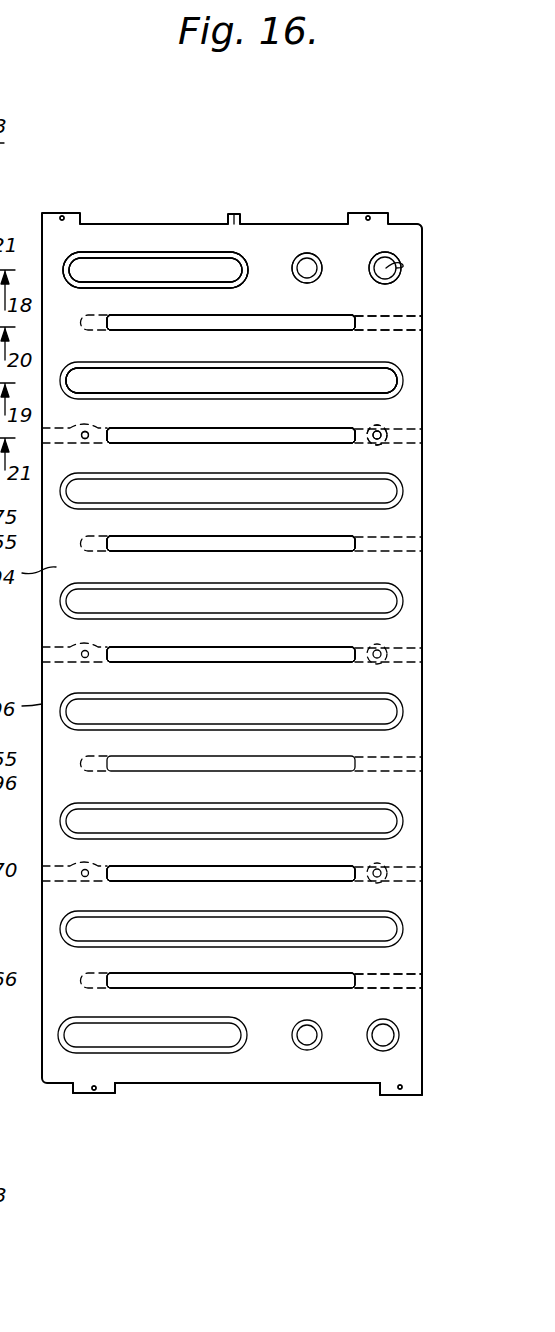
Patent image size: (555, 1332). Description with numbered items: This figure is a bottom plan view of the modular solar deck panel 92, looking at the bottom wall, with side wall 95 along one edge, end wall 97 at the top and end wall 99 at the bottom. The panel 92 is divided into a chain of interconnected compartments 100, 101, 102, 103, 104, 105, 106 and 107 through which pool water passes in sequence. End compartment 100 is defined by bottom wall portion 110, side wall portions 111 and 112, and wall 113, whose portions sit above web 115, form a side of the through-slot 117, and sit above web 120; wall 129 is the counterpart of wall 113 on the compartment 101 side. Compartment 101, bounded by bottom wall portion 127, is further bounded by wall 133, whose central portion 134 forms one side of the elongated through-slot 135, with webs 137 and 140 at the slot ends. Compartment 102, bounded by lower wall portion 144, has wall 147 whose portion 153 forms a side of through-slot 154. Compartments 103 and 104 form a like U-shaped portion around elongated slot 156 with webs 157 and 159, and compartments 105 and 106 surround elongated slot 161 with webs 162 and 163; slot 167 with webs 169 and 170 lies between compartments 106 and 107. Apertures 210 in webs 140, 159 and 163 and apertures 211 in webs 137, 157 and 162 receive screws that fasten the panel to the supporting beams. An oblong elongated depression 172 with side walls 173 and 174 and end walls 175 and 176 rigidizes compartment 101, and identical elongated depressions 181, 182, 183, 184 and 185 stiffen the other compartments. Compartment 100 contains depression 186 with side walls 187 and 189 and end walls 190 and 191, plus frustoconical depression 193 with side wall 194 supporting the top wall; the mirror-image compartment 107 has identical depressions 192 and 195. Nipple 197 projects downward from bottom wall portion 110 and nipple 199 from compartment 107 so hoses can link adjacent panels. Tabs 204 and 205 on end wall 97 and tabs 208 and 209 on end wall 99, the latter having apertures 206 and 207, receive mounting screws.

The solar deck panel 92 is at (264, 215).
The tab 204 is at (80, 220).
The portion of side wall 96 112 is at (42, 241).
The end wall 97 is at (178, 224).
The portion of bottom wall 94 110 is at (304, 240).
The tab 205 is at (378, 218).
The portion of side wall 95 111 is at (423, 254).
The compartment 100 is at (290, 252).
The depression 186 is at (131, 272).
The end wall of depression 186 191 is at (68, 271).
The side wall of depression 186 187 is at (162, 266).
The side wall of depression 186 189 is at (106, 274).
The end wall of depression 186 190 is at (238, 268).
The nipple 197 is at (312, 272).
The frustoconical depression 193 is at (415, 258).
The side wall of frustoconical depression 193 194 is at (391, 271).
The compartment 101 is at (264, 350).
The web 115 is at (422, 320).
The slot 117 is at (304, 324).
The portion of bottom wall 94 127 is at (220, 320).
The wall 129 is at (288, 318).
The web 120 is at (124, 324).
The wall 113 is at (202, 304).
The elongated depression 172 is at (405, 374).
The side wall of depression 172 173 is at (170, 372).
The end wall of depression 172 175 is at (68, 382).
The end wall of depression 172 176 is at (394, 378).
The compartment 102 is at (246, 470).
The apertures 210 is at (85, 436).
The apertures 211 is at (387, 435).
The central portion of wall 133 134 is at (164, 428).
The wall 133 is at (226, 428).
The side wall of depression 172 174 is at (238, 394).
The through-slot 135 is at (286, 430).
The web 140 is at (106, 438).
The web 137 is at (297, 439).
The elongated depression 181 is at (387, 493).
The compartment 103 is at (262, 577).
The wall 147 is at (186, 538).
The portion of wall 147 153 is at (287, 538).
The portion of lower wall 94 144 is at (216, 542).
The through-slot 154 is at (298, 544).
The elongated depression 182 is at (387, 603).
The compartment 104 is at (220, 687).
The web 159 is at (118, 656).
The web 157 is at (340, 652).
The elongated slot 156 is at (254, 654).
The elongated depression 183 is at (387, 713).
The side wall 95 is at (422, 738).
The compartment 105 is at (248, 797).
The elongated depression 184 is at (387, 823).
The compartment 106 is at (242, 905).
The web 163 is at (118, 874).
The elongated slot 161 is at (270, 872).
The web 162 is at (336, 856).
The elongated depression 185 is at (387, 931).
The compartment 107 is at (282, 1017).
The web 170 is at (422, 976).
The web 169 is at (112, 982).
The elongated slot 167 is at (248, 980).
The depression 192 is at (150, 1034).
The nipple 199 is at (307, 1046).
The frustoconical depression 195 is at (385, 1036).
The end wall 99 is at (198, 1086).
The aperture 206 is at (80, 1092).
The tab 208 is at (94, 1094).
The tab 209 is at (386, 1096).
The aperture 207 is at (402, 1092).